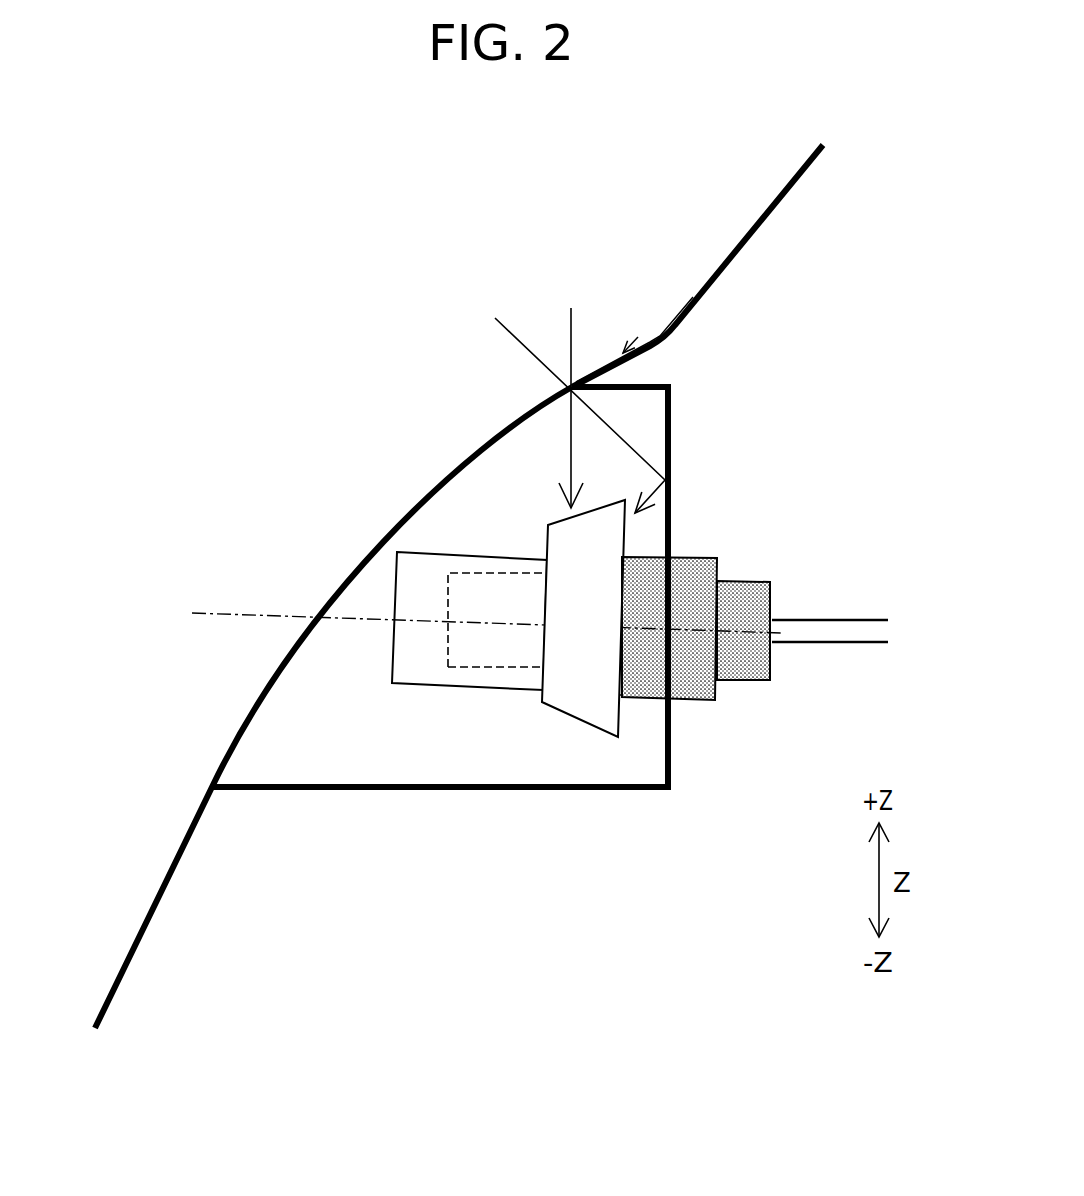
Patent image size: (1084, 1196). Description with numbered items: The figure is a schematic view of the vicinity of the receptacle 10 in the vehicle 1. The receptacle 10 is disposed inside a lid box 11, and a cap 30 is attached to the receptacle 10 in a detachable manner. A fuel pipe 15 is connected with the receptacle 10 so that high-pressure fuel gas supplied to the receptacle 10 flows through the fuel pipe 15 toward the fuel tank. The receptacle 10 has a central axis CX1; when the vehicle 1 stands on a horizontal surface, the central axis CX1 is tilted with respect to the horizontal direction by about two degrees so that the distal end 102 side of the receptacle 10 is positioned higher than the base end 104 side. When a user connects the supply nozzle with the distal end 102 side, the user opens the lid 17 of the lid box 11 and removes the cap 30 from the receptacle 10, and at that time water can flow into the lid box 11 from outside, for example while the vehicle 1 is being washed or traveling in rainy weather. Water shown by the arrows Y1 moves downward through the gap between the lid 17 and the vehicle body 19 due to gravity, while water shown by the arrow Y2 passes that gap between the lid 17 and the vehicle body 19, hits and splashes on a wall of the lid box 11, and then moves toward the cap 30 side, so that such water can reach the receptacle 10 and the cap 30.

The vehicle 1 is at (718, 190).
The vehicle body 19 is at (713, 283).
The lid 17 is at (463, 470).
The lid box 11 is at (525, 465).
The arrows Y1 is at (653, 340).
The arrow Y2 is at (630, 442).
The central axis CX1 is at (459, 615).
The cap 30 is at (473, 550).
The distal end 102 is at (448, 648).
The receptacle 10 is at (692, 542).
The base end 104 is at (772, 672).
The fuel pipe 15 is at (863, 620).